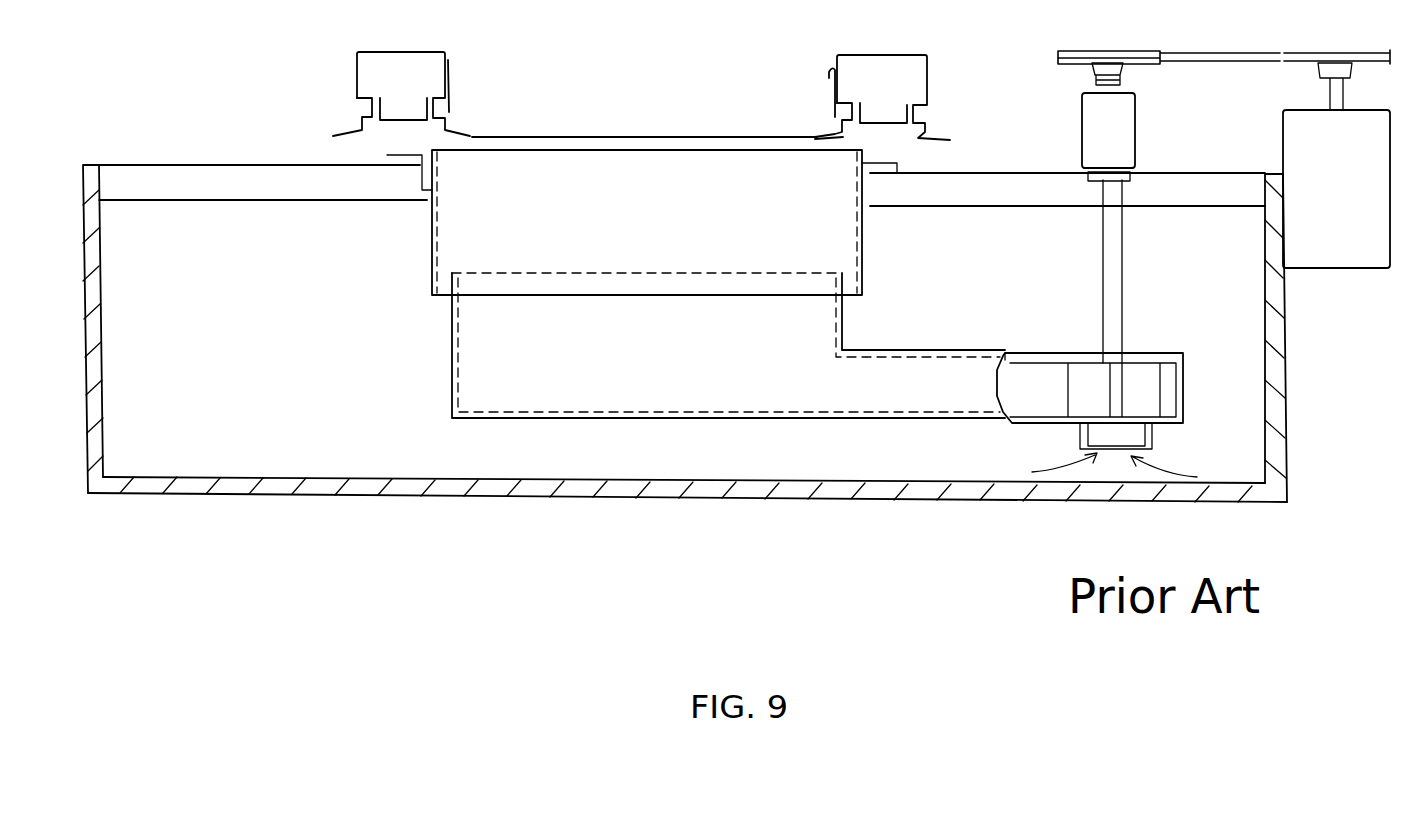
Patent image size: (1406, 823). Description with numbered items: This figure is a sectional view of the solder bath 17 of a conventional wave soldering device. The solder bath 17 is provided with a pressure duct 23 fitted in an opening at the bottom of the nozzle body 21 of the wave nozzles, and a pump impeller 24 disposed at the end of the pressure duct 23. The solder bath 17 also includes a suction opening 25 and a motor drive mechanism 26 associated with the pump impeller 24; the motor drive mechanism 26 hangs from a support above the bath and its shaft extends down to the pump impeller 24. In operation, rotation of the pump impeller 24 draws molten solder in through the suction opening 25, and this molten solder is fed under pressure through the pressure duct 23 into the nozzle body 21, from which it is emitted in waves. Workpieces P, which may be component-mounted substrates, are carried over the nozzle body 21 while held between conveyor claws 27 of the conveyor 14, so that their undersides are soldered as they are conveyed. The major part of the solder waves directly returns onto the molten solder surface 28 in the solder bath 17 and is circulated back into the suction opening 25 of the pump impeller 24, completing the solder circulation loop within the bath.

The conveyor 14 is at (875, 68).
The conveyor claws 27 is at (825, 128).
The workpieces P is at (655, 137).
The molten solder surface 28 is at (983, 207).
The motor drive mechanism 26 is at (1200, 54).
The nozzle body 21 is at (862, 237).
The pressure duct 23 is at (890, 350).
The pump impeller 24 is at (1148, 385).
The suction opening 25 is at (1138, 427).
The solder bath 17 is at (903, 495).